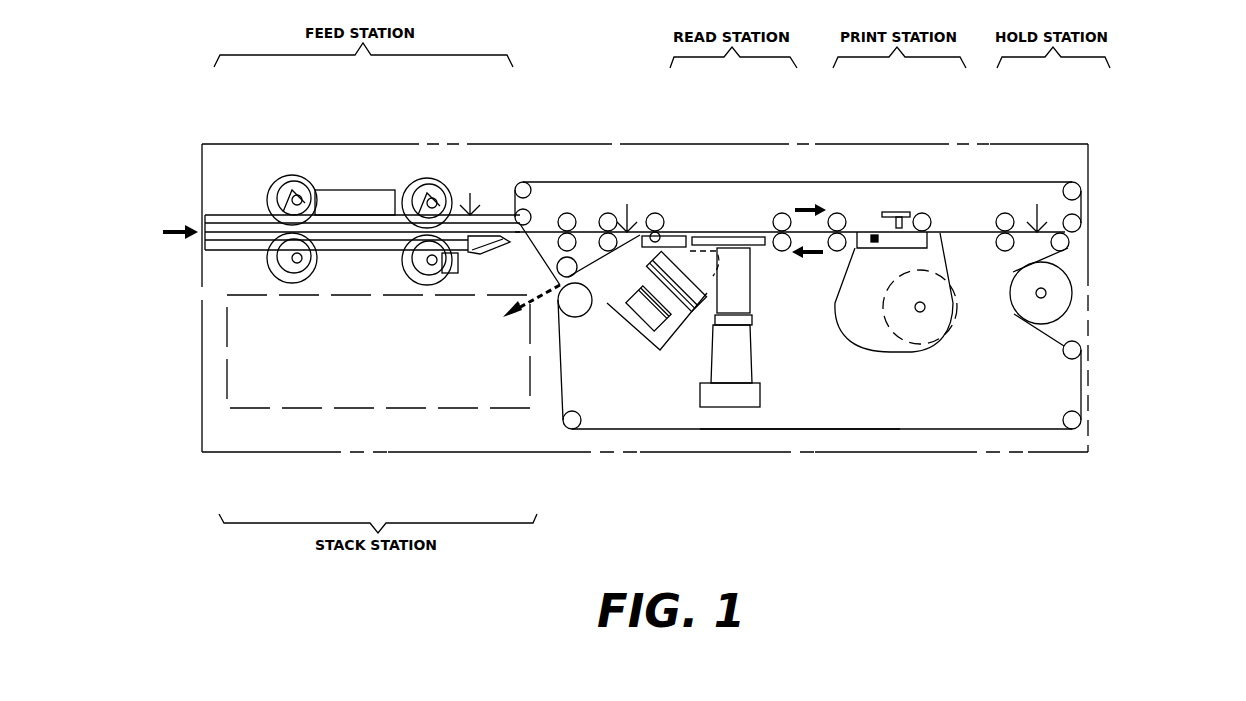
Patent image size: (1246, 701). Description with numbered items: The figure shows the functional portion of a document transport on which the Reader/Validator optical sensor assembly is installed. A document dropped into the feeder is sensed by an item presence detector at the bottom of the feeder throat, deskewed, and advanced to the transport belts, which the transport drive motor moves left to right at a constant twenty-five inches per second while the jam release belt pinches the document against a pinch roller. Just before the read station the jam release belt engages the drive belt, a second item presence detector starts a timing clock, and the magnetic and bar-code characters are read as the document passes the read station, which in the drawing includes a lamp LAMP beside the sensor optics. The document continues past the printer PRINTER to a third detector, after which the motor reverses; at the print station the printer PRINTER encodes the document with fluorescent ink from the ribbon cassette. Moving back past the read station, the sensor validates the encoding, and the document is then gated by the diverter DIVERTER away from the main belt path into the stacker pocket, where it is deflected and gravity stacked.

The printer PRINTER is at (897, 211).
The diverter DIVERTER is at (642, 244).
The lamp LAMP is at (652, 328).